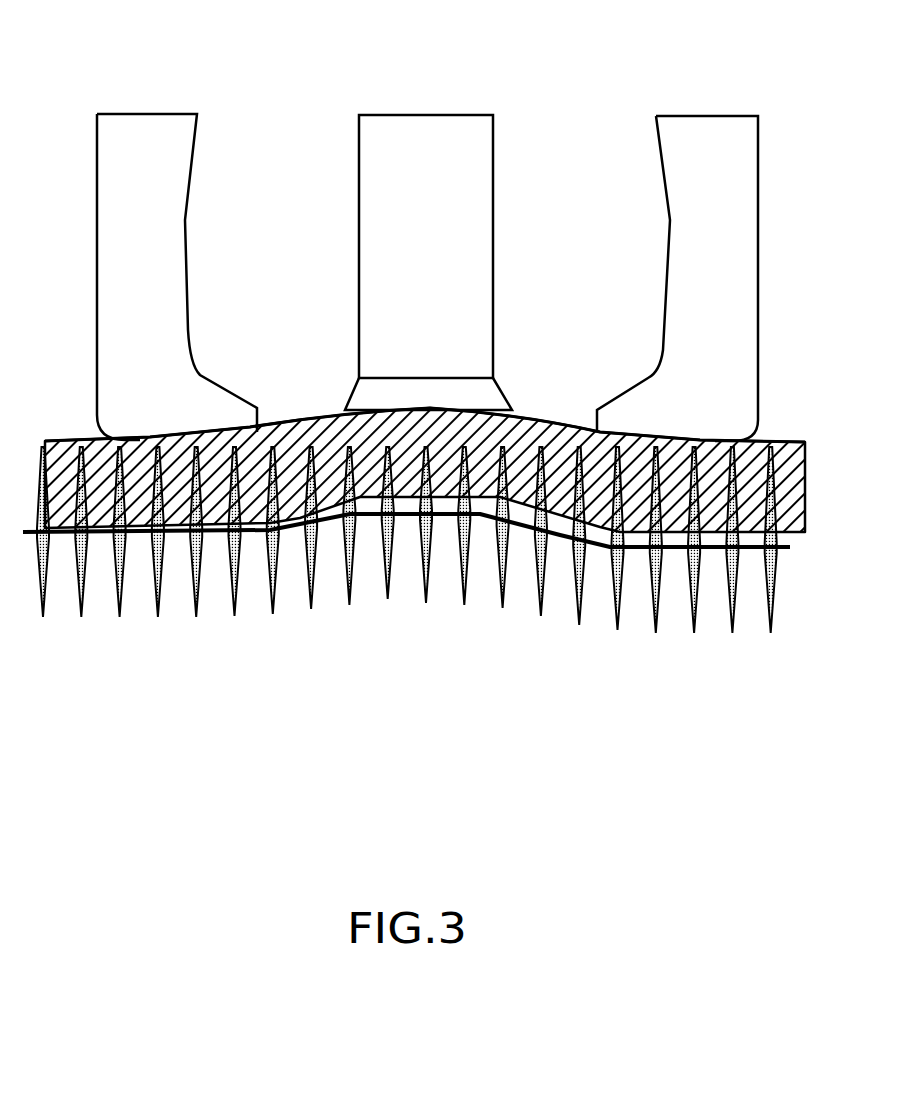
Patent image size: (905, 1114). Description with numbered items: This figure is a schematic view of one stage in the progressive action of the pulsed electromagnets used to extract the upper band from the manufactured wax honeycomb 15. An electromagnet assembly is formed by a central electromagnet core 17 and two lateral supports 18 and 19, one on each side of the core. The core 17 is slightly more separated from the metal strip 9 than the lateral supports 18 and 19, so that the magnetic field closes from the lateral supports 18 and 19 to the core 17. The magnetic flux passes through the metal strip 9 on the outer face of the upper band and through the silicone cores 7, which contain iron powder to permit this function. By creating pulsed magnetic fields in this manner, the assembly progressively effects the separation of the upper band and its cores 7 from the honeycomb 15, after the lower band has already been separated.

The silicone cores 7 is at (522, 420).
The metal strip 9 is at (327, 414).
The honeycomb 15 is at (468, 560).
The central electromagnet core 17 is at (427, 128).
The lateral support 18 is at (144, 127).
The lateral support 19 is at (711, 128).